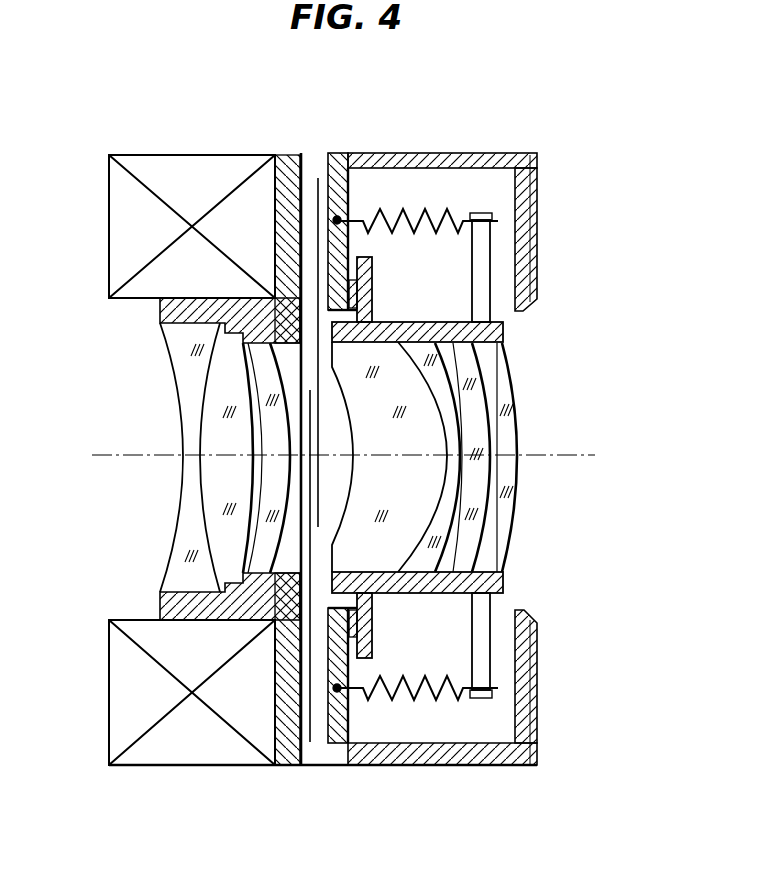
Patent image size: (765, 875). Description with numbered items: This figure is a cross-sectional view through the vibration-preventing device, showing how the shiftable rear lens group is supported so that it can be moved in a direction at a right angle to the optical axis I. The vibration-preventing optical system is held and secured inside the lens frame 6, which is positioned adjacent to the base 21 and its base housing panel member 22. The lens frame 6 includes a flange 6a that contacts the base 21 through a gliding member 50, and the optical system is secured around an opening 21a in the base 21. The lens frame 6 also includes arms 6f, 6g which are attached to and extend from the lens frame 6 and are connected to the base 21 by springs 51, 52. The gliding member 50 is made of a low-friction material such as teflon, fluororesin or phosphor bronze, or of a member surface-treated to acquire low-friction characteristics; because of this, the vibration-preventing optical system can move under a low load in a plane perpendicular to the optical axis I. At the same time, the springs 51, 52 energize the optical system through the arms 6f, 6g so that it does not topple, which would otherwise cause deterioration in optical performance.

The optical axis I is at (113, 455).
The lens frame 6 is at (437, 322).
The flange 6a is at (372, 290).
The arm 6f is at (480, 633).
The arm 6g is at (480, 275).
The base 21 is at (338, 172).
The opening 21a is at (328, 316).
The base housing panel member 22 is at (536, 243).
The gliding member 50 is at (318, 305).
The spring 51 is at (410, 696).
The spring 52 is at (403, 212).